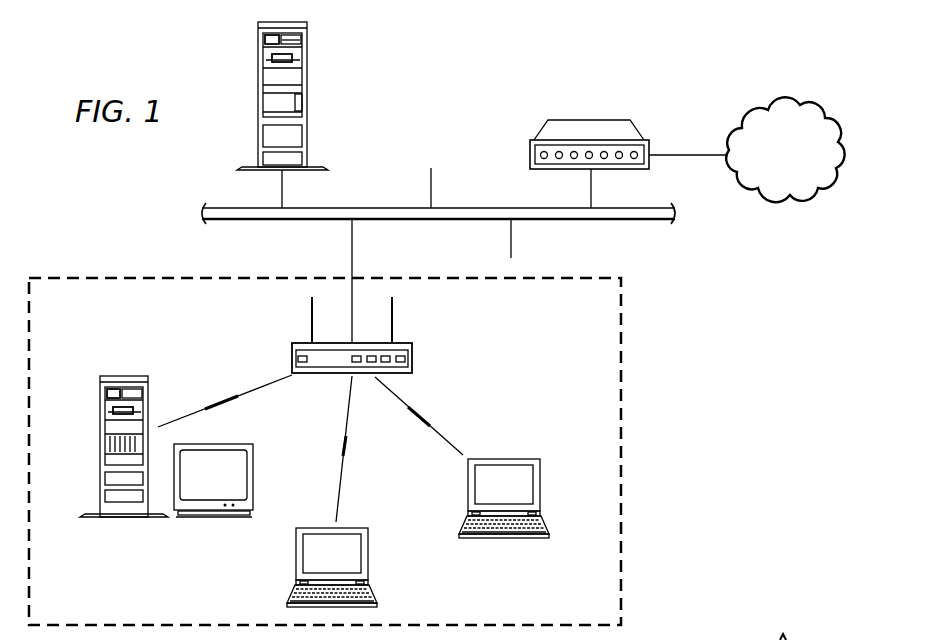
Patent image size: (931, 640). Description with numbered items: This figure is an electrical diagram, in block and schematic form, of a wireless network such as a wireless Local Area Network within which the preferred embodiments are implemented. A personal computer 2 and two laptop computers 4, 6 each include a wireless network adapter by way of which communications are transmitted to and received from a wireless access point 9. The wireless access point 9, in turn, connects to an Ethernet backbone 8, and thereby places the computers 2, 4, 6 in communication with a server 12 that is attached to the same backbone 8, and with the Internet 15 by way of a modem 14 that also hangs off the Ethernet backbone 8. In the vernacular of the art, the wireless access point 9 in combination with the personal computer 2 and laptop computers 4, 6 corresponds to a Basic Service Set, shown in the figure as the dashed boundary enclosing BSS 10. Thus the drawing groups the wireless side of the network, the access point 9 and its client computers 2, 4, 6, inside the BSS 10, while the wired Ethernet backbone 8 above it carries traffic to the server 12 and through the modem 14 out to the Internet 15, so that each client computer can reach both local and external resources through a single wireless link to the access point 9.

The personal computer 2 is at (118, 376).
The laptop computer 4 is at (366, 558).
The laptop computer 6 is at (541, 490).
The Ethernet backbone 8 is at (639, 221).
The wireless access point 9 is at (412, 353).
The Basic Service Set 10 is at (628, 490).
The server 12 is at (258, 65).
The modem 14 is at (608, 120).
The Internet 15 is at (784, 102).